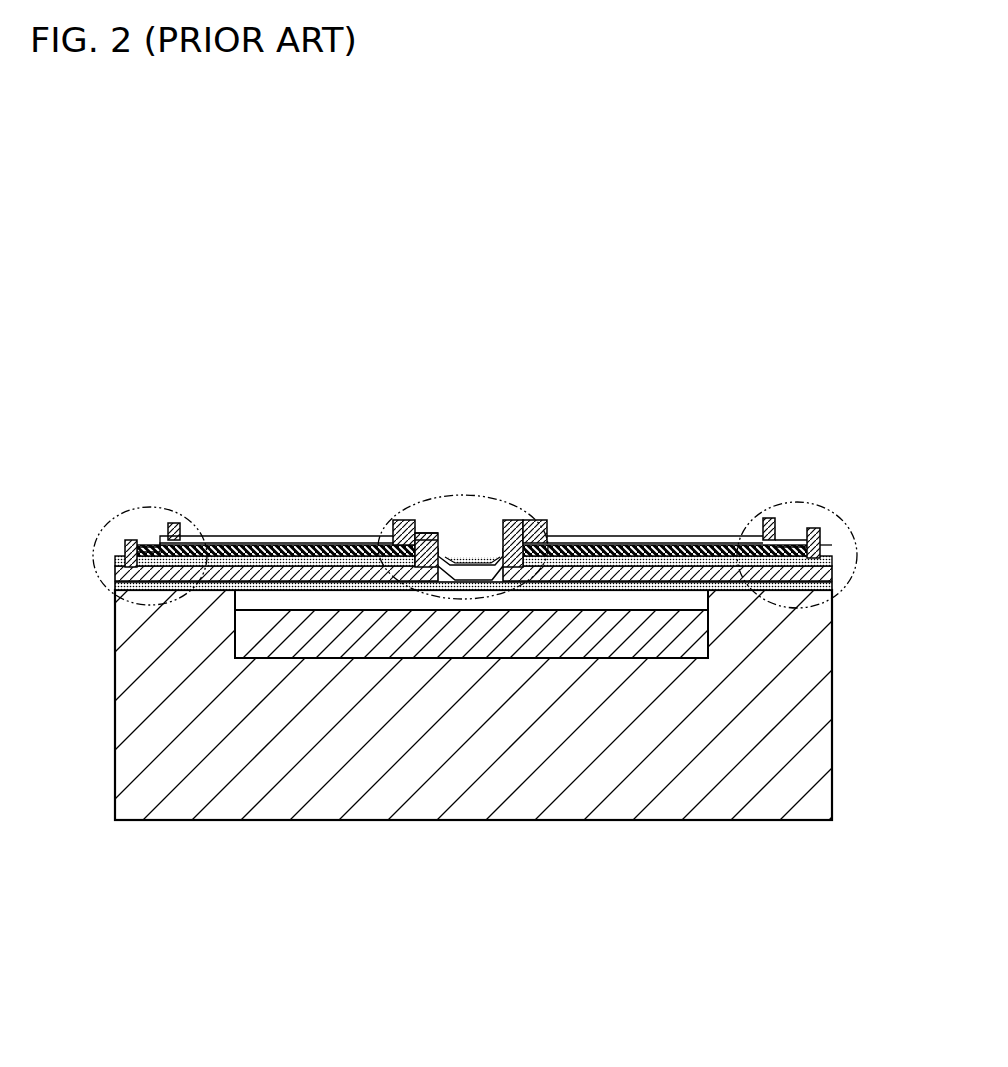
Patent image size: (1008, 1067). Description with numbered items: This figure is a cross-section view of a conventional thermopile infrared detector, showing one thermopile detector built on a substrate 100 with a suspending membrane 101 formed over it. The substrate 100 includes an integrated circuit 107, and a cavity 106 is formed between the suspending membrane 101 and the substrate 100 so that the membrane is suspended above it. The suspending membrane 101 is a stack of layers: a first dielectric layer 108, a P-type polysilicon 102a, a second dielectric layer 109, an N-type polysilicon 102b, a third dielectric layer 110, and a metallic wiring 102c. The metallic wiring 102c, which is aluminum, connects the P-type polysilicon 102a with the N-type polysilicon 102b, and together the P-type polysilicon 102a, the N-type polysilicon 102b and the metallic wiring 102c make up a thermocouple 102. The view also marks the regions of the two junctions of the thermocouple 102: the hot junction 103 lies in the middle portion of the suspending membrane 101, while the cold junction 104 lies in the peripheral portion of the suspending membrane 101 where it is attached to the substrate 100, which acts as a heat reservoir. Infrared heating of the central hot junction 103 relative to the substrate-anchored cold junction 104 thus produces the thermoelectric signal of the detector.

The substrate 100 is at (290, 787).
The suspending membrane 101 is at (471, 752).
The thermocouple 102 is at (461, 470).
The P-type polysilicon 102a is at (293, 570).
The N-type polysilicon 102b is at (357, 543).
The metallic wiring 102c is at (275, 450).
The hot junction 103 is at (530, 510).
The cold junction 104 is at (93, 567).
The cavity 106 is at (597, 597).
The integrated circuit 107 is at (548, 640).
The first dielectric layer 108 is at (833, 578).
The second dielectric layer 109 is at (830, 555).
The third dielectric layer 110 is at (785, 530).